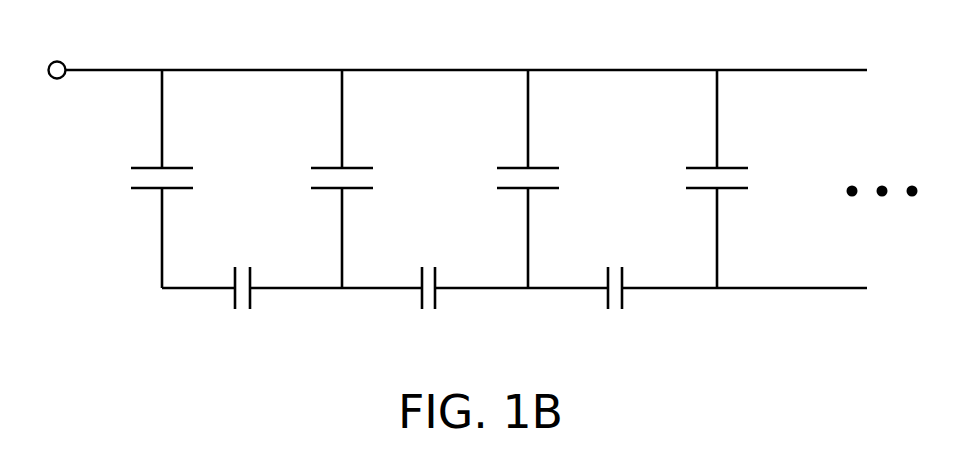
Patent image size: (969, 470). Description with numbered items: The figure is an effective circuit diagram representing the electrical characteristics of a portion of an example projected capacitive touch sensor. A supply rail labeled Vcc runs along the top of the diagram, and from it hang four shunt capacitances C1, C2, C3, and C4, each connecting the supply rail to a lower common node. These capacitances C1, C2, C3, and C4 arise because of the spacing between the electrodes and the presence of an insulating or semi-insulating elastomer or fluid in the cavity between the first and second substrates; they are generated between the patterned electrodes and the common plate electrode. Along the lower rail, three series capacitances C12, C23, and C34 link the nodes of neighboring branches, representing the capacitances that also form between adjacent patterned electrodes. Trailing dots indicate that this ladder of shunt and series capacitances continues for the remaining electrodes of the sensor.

The supply voltage terminal Vcc is at (57, 49).
The capacitance C1 is at (141, 179).
The capacitance C2 is at (322, 179).
The capacitance C3 is at (510, 179).
The capacitance C4 is at (698, 179).
The capacitance C12 is at (244, 311).
The capacitance C23 is at (431, 307).
The capacitance C34 is at (613, 307).